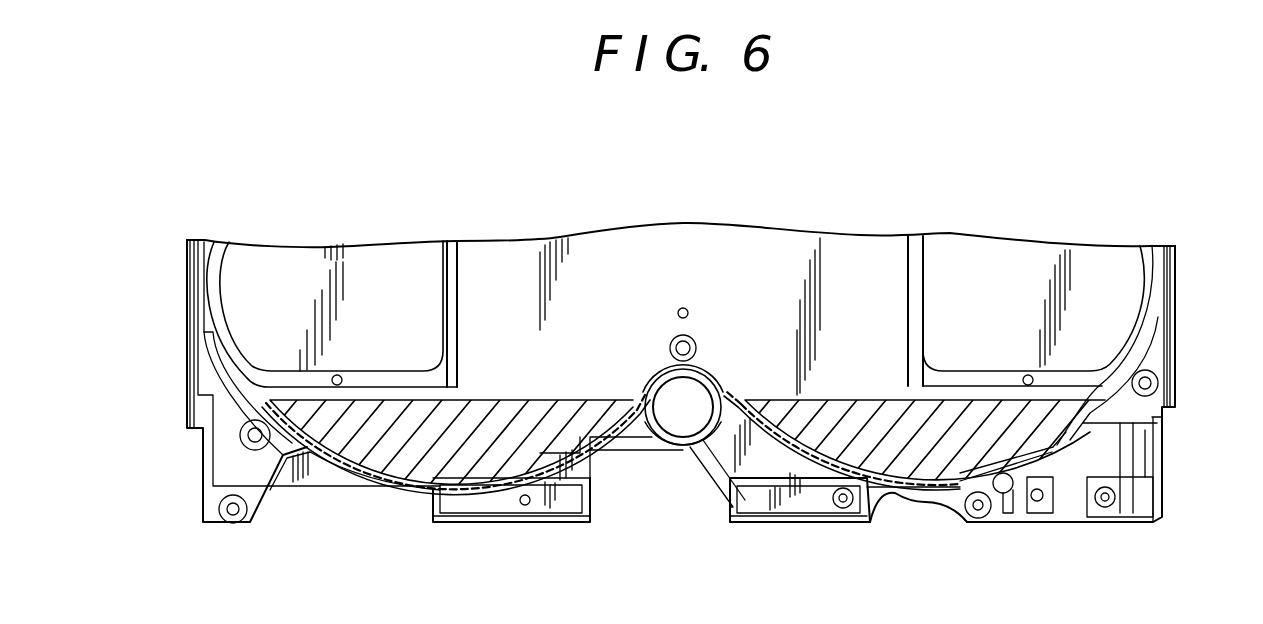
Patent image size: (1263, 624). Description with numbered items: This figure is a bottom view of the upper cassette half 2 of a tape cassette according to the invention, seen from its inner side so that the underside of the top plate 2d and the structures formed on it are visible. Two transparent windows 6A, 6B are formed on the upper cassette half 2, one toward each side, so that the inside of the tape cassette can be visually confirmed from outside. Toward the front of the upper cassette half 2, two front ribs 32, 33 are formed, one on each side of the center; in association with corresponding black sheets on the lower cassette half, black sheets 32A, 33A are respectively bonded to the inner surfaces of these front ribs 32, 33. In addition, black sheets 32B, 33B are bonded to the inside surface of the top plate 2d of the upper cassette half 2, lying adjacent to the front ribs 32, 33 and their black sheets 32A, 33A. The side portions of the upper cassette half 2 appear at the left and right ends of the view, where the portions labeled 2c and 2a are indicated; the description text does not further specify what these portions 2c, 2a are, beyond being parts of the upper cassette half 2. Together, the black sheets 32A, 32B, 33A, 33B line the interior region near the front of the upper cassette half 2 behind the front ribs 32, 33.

The upper cassette half 2 is at (1128, 234).
The right side wall 2a is at (1175, 316).
The left side wall 2c is at (187, 310).
The top plate 2d is at (521, 253).
The transparent window 6A is at (930, 275).
The transparent window 6B is at (437, 268).
The front rib 32 is at (498, 485).
The black sheet 32A is at (565, 434).
The black sheet 32B is at (484, 408).
The front rib 33 is at (808, 455).
The black sheet 33A is at (782, 420).
The black sheet 33B is at (850, 407).